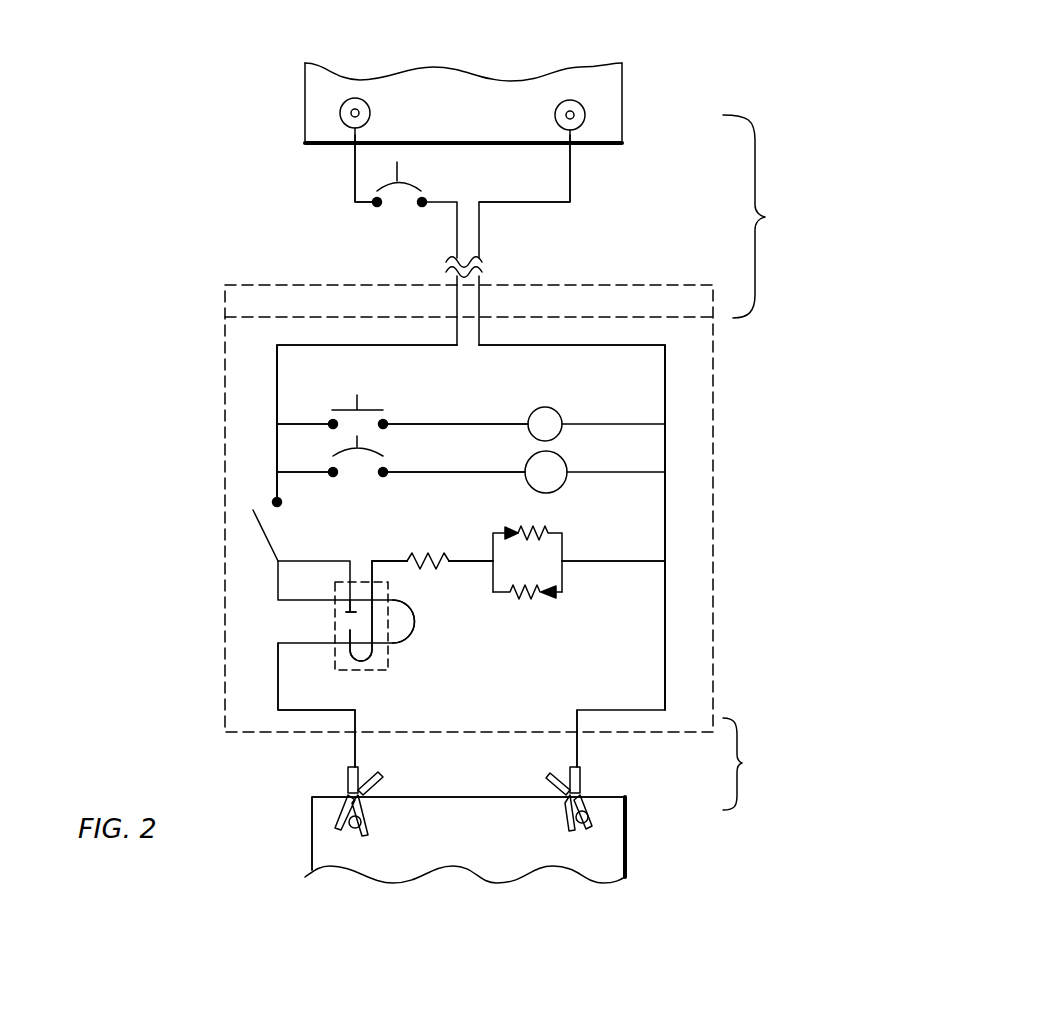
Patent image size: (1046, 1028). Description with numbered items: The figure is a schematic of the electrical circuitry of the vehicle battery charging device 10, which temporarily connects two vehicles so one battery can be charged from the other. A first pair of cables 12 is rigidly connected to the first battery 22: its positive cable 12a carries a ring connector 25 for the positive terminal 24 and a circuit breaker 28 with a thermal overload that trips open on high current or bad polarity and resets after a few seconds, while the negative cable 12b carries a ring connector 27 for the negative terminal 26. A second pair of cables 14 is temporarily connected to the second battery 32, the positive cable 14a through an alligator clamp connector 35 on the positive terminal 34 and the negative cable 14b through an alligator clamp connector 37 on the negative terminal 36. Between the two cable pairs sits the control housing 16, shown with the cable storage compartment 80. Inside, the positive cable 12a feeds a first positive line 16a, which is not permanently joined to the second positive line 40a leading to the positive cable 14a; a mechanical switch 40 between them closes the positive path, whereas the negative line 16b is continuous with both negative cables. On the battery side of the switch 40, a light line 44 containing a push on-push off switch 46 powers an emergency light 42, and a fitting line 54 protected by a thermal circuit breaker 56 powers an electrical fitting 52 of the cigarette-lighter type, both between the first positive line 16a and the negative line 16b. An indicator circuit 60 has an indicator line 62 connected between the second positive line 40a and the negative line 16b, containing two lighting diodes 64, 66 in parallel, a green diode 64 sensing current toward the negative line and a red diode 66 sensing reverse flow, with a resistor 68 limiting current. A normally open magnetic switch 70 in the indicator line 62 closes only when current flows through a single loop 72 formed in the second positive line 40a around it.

The vehicle battery charging device 10 is at (751, 342).
The first pair of cables 12 is at (768, 216).
The positive cable 12a is at (352, 167).
The negative cable 12b is at (573, 167).
The second pair of cables 14 is at (752, 764).
The positive cable 14a is at (355, 748).
The negative cable 14b is at (578, 750).
The control housing 16 is at (713, 400).
The first positive line 16a is at (277, 378).
The negative line 16b is at (665, 509).
The first battery 22 is at (513, 75).
The positive terminal 24 is at (345, 107).
The ring connector 25 is at (343, 115).
The negative terminal 26 is at (583, 106).
The ring connector 27 is at (585, 115).
The circuit breaker 28 is at (396, 208).
The second battery 32 is at (533, 855).
The positive terminal 34 is at (345, 822).
The alligator clamp connector 35 is at (347, 780).
The negative terminal 36 is at (585, 820).
The alligator clamp connector 37 is at (583, 792).
The mechanical switch 40 is at (257, 522).
The second positive line 40a is at (278, 665).
The emergency light 42 is at (553, 408).
The light line 44 is at (440, 424).
The push on-push off switch 46 is at (376, 395).
The electrical fitting 52 is at (563, 449).
The fitting line 54 is at (433, 472).
The thermal circuit breaker 56 is at (354, 480).
The indicator circuit 60 is at (514, 668).
The indicator line 62 is at (470, 563).
The lighting diode 64 is at (536, 527).
The lighting diode 66 is at (523, 596).
The resistor 68 is at (429, 550).
The normally open magnetic switch 70 is at (350, 670).
The single loop 72 is at (408, 635).
The cable storage compartment 80 is at (275, 283).